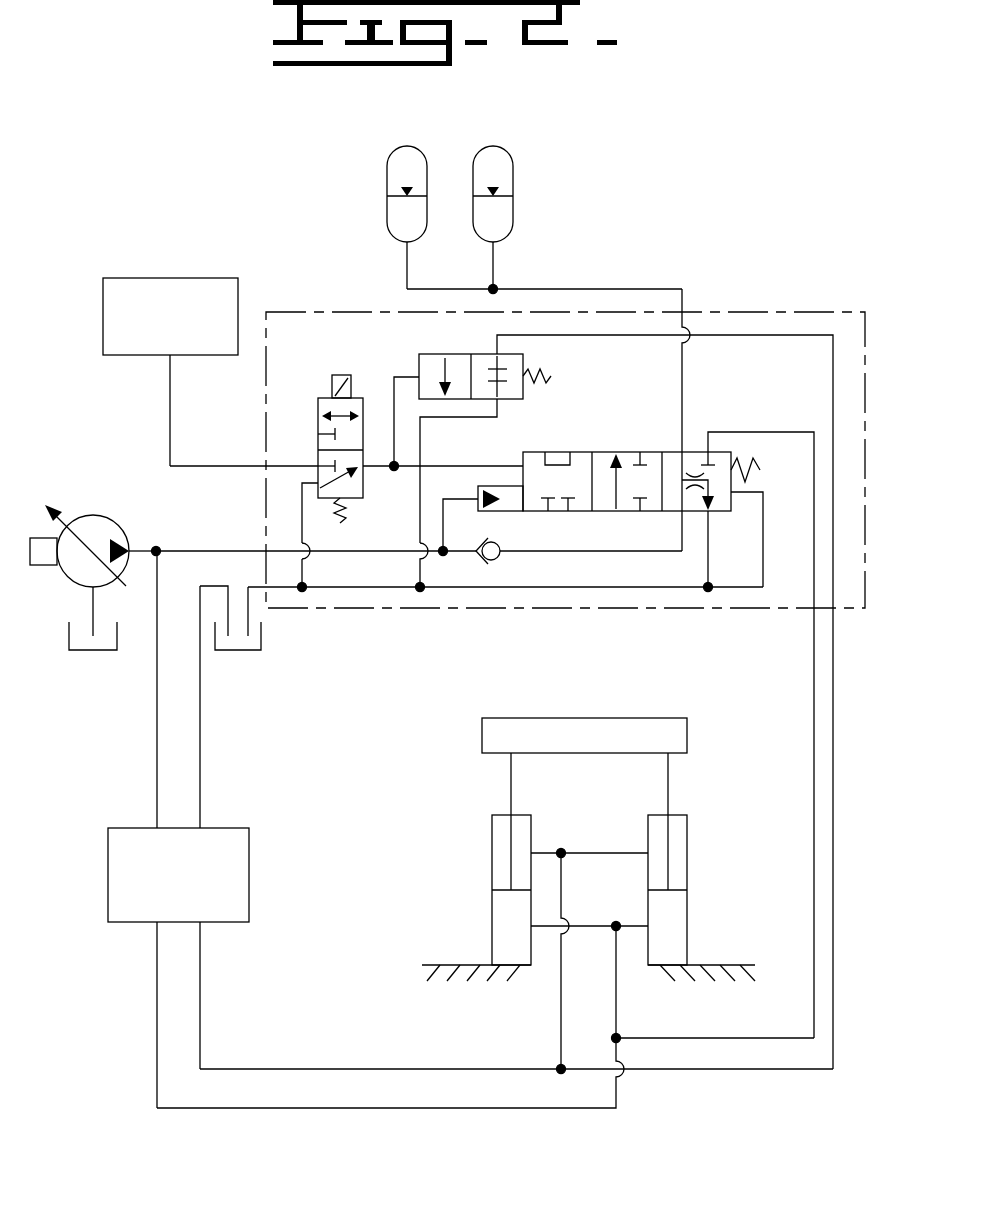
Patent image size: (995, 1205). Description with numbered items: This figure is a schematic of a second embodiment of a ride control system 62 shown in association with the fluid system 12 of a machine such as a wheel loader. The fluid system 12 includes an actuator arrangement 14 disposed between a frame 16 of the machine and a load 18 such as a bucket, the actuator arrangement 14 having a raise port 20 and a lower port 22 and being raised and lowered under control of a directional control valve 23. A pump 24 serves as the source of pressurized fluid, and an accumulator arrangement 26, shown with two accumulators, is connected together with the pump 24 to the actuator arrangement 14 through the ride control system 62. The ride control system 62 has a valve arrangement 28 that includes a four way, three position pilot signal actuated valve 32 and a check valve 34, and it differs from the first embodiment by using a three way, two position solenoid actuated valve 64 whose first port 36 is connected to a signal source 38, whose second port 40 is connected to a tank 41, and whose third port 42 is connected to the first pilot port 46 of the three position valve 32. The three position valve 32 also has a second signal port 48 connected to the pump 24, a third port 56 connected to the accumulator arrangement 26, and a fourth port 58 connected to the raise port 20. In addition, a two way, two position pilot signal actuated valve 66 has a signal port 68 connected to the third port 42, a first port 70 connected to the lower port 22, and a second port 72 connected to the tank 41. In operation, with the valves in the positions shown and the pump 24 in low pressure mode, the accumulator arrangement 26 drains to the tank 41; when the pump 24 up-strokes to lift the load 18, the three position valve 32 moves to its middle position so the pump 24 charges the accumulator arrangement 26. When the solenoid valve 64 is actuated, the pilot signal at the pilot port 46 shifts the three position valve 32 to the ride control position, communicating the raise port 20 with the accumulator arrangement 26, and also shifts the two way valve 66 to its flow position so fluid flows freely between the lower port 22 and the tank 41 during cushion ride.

The fluid system 12 is at (753, 1134).
The actuator arrangement 14 is at (710, 900).
The frame 16 is at (733, 965).
The load 18 is at (630, 718).
The raise port 20 is at (632, 925).
The lower port 22 is at (594, 852).
The directional control valve 23 is at (232, 828).
The pump 24 is at (108, 517).
The accumulator arrangement 26 is at (522, 150).
The valve arrangement 28 is at (748, 402).
The four way, three position pilot signal actuated valve 32 is at (731, 512).
The check valve 34 is at (505, 556).
The first port 36 is at (318, 466).
The signal source 38 is at (190, 278).
The second port 40 is at (302, 520).
The tank 41 is at (69, 640).
The third port 42 is at (363, 468).
The first pilot port 46 is at (497, 464).
The second signal port 48 is at (500, 512).
The third port 56 is at (680, 452).
The fourth port 58 is at (709, 452).
The ride control system 62 is at (835, 302).
The three way, two position solenoid actuated valve 64 is at (365, 492).
The two way, two position pilot signal actuated valve 66 is at (455, 354).
The signal port 68 is at (394, 390).
The first port 70 is at (622, 337).
The second port 72 is at (500, 417).